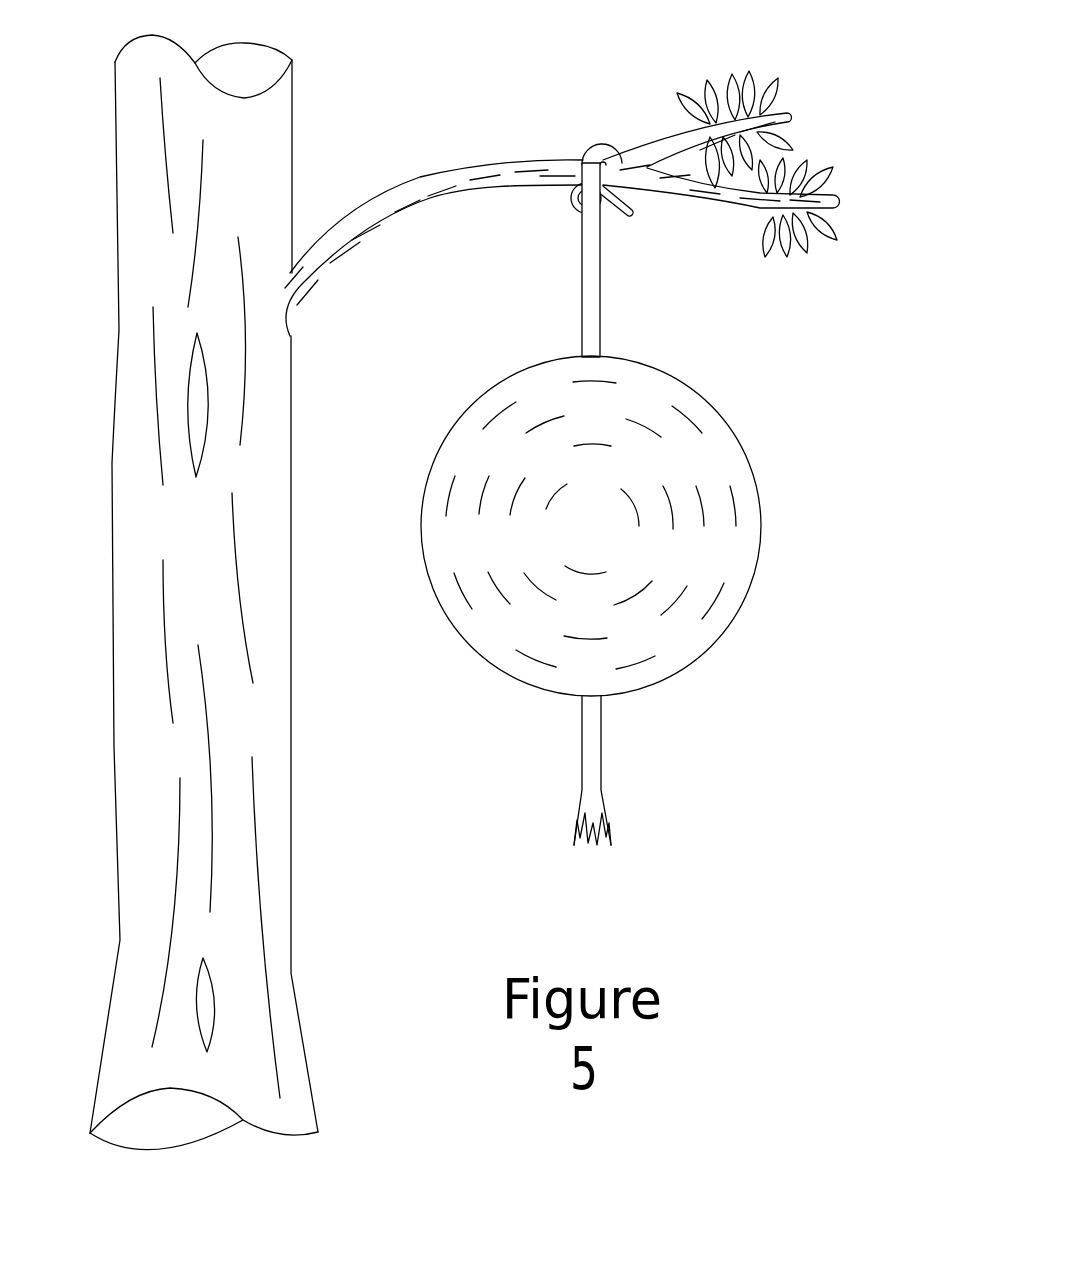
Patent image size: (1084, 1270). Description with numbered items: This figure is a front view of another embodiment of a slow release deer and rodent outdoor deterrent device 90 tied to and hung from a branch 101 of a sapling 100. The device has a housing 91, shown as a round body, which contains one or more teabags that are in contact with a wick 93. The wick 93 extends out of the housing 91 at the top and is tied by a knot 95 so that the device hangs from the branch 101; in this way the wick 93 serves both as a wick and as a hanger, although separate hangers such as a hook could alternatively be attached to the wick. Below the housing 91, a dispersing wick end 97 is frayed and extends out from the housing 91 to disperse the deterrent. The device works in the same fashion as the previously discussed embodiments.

The slow release deer and rodent outdoor deterrent device 90 is at (798, 413).
The housing 91 is at (735, 620).
The wick 93 is at (592, 288).
The knot 95 is at (603, 158).
The dispersing wick end 97 is at (580, 812).
The sapling 100 is at (335, 98).
The branch 101 is at (468, 177).